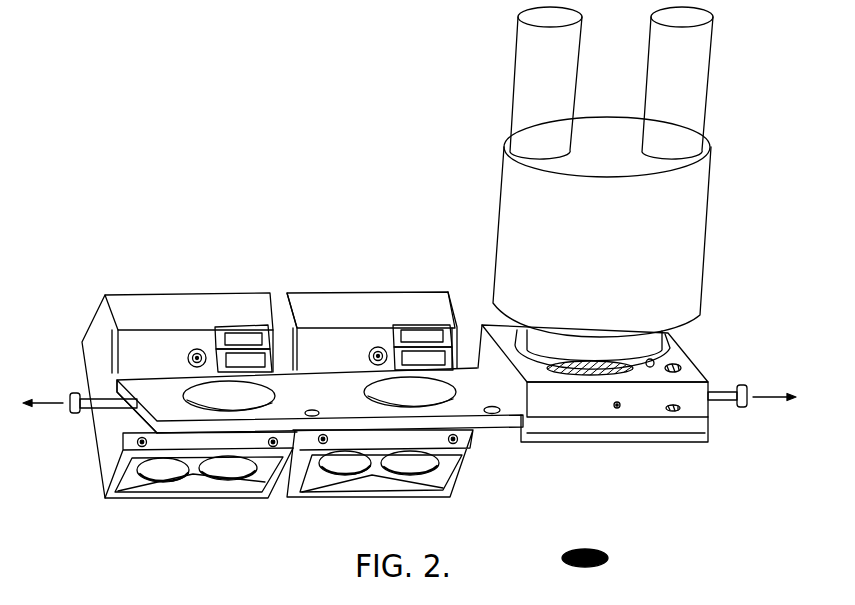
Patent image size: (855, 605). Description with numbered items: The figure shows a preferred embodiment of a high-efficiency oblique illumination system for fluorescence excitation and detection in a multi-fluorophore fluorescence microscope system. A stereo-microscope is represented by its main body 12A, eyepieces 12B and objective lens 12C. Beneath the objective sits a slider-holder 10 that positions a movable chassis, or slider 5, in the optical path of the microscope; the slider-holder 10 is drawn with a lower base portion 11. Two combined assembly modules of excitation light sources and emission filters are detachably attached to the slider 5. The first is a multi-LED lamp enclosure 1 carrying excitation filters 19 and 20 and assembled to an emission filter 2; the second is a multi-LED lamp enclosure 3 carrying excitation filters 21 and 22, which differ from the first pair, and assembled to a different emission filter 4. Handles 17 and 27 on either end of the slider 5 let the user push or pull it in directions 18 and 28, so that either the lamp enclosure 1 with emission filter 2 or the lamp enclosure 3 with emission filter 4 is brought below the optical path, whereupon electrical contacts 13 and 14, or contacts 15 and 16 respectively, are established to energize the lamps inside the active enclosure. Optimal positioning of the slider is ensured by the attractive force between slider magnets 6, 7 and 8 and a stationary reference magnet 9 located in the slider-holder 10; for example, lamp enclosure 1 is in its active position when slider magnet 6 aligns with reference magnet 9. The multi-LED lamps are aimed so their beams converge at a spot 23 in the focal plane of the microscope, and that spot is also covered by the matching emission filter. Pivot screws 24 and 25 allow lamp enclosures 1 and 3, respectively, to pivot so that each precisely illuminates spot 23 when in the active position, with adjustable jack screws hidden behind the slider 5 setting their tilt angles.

The multi-LED lamp enclosure 1 is at (90, 357).
The emission filter 2 is at (196, 396).
The multi-LED lamp enclosure 3 is at (306, 315).
The emission filter 4 is at (382, 393).
The movable chassis (slider) 5 is at (302, 395).
The slider magnet 6 is at (319, 411).
The slider magnet 7 is at (489, 406).
The slider magnet 8 is at (677, 404).
The stationary reference magnet 9 is at (674, 362).
The slider-holder 10 is at (551, 405).
The base plate of mounting block 11 is at (528, 434).
The main body 12A is at (593, 257).
The eyepieces 12B is at (534, 80).
The objective lens 12C is at (585, 359).
The electrical contact 13 is at (236, 344).
The electrical contact 14 is at (237, 365).
The electrical contact 15 is at (418, 341).
The electrical contact 16 is at (418, 363).
The handle 17 is at (87, 413).
The direction 18 is at (43, 397).
The excitation filter 19 is at (153, 474).
The excitation filter 20 is at (221, 472).
The excitation filter 21 is at (336, 467).
The excitation filter 22 is at (403, 467).
The spot (convergence point) 23 is at (614, 554).
The pivot screw 24 is at (186, 355).
The pivot screw 25 is at (367, 353).
The handle 27 is at (733, 405).
The direction 28 is at (774, 391).